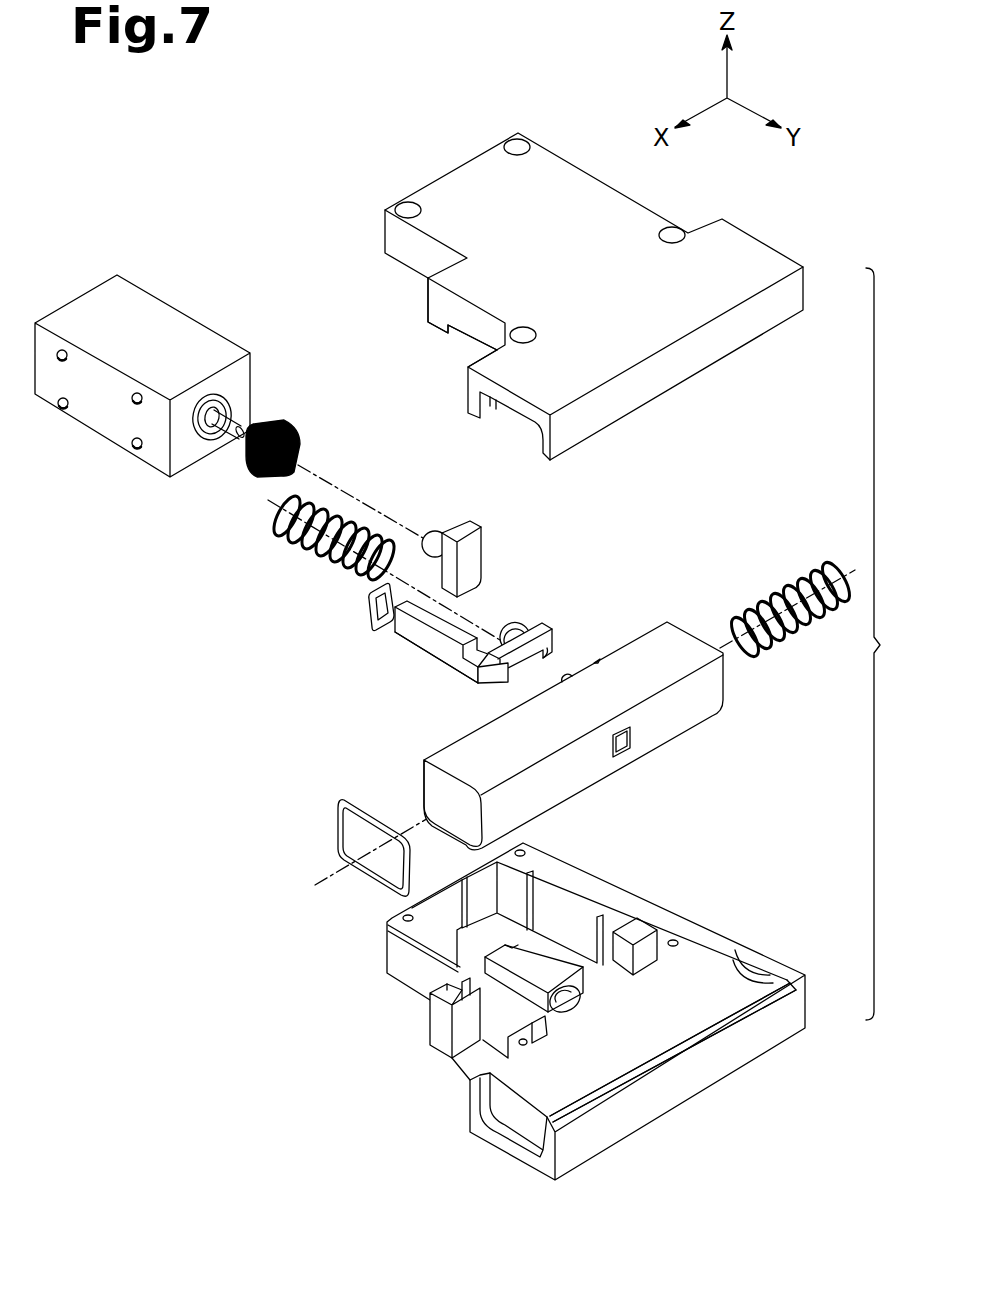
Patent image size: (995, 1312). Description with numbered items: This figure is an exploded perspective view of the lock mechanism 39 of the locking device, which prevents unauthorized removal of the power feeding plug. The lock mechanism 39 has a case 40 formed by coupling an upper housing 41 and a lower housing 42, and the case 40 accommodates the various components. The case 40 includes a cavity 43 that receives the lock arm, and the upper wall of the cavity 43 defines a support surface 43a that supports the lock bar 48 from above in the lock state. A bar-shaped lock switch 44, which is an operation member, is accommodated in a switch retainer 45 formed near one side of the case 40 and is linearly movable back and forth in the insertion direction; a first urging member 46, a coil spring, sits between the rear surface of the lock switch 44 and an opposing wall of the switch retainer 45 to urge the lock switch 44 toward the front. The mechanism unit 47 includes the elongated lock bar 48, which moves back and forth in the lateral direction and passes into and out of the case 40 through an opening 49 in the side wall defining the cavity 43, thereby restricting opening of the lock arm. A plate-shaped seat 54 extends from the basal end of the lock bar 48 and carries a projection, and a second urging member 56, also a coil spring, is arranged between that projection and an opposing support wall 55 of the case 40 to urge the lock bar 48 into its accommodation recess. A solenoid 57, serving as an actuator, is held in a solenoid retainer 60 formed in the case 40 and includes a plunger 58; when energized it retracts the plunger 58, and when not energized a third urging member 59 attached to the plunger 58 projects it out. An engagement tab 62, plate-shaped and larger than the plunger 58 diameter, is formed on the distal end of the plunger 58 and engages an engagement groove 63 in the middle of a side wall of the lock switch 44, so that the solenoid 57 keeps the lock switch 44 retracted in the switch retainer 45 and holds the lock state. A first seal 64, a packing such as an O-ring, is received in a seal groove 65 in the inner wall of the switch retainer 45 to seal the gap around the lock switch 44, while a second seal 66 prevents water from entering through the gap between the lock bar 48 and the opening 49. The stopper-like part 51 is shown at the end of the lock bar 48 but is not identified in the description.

The lock mechanism 39 is at (246, 144).
The case 40 is at (892, 644).
The upper housing 41 is at (803, 292).
The lower housing 42 is at (806, 1004).
The cavity 43 is at (430, 1032).
The support surface 43a is at (477, 338).
The lock switch 44 is at (423, 775).
The switch retainer 45 is at (593, 1085).
The first urging member 46 is at (810, 627).
The mechanism unit 47 is at (373, 644).
The lock bar 48 is at (419, 658).
The opening 49 is at (487, 1052).
The stopper block 51 is at (495, 680).
The seat 54 is at (555, 640).
The support wall 55 is at (568, 962).
The second urging member 56 is at (318, 558).
The solenoid 57 is at (168, 303).
The plunger 58 is at (233, 418).
The third urging member 59 is at (297, 428).
The solenoid retainer 60 is at (565, 915).
The engagement tab 62 is at (483, 543).
The engagement groove 63 is at (583, 672).
The first seal 64 is at (337, 830).
The seal groove 65 is at (510, 1132).
The second seal 66 is at (365, 610).